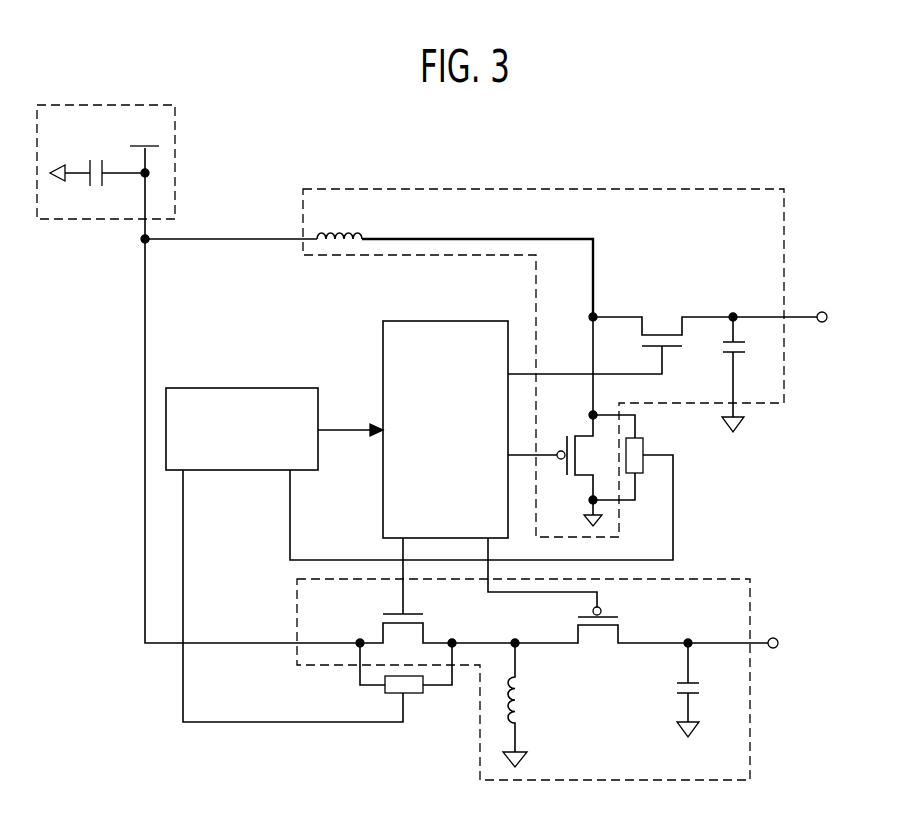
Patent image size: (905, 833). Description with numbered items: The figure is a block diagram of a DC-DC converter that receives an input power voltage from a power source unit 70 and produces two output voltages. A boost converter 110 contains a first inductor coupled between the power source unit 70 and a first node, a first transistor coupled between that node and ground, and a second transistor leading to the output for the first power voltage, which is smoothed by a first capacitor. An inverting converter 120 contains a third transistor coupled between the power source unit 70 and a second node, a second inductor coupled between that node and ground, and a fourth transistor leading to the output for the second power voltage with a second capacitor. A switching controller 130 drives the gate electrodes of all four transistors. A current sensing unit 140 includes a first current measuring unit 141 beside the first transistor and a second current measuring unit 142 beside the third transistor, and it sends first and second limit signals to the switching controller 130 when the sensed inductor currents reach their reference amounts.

The power source unit 70 is at (124, 105).
The boost converter 110 is at (604, 188).
The inverting converter 120 is at (718, 578).
The switching controller 130 is at (445, 320).
The current sensing unit 140 is at (253, 387).
The first current measuring unit 141 is at (645, 446).
The second current measuring unit 142 is at (417, 695).